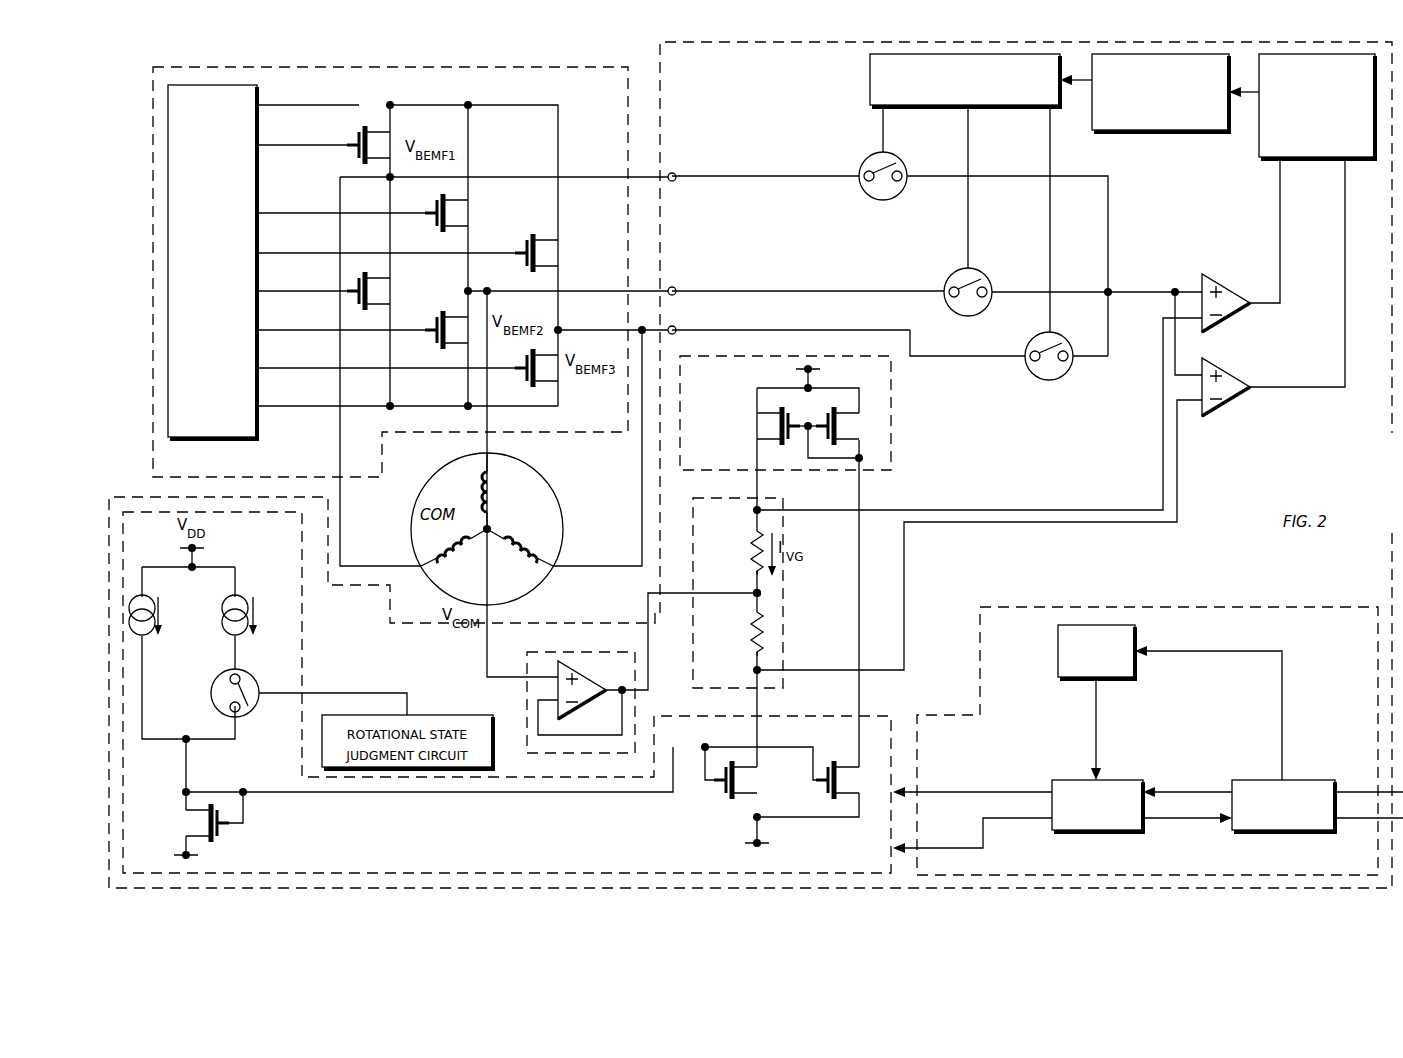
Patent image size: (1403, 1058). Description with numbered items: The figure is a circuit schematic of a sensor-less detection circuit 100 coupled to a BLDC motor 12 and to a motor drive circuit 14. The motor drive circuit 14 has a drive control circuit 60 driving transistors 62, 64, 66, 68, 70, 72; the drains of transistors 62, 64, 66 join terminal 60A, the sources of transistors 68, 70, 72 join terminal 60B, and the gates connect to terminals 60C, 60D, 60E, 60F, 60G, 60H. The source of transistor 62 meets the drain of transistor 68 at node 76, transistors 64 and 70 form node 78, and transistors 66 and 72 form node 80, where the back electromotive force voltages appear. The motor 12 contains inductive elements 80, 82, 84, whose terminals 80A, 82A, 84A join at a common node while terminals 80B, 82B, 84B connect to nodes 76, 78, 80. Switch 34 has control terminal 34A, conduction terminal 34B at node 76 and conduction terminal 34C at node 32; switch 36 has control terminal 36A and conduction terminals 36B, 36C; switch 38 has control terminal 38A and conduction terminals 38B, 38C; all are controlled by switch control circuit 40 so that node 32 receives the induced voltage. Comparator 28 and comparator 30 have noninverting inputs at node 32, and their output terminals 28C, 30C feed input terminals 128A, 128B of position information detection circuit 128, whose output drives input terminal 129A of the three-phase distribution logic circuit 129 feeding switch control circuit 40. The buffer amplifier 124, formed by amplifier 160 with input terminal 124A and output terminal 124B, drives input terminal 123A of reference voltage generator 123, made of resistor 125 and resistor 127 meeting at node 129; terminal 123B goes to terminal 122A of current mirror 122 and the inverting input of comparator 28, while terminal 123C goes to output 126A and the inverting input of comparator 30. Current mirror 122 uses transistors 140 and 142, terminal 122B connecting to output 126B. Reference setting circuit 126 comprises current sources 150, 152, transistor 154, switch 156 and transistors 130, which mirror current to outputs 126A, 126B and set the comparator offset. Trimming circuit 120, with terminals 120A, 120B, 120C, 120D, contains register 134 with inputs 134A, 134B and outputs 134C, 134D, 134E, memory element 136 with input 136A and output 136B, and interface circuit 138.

The BLDC motor 12 is at (452, 469).
The motor drive circuit 14 is at (153, 164).
The comparator 28 is at (1215, 286).
The output terminal of comparator 28 28C is at (1258, 305).
The comparator 30 is at (1215, 370).
The output terminal of comparator 30 30C is at (1258, 390).
The node 32 is at (1108, 290).
The switch 34 is at (885, 200).
The control terminal 34A is at (883, 130).
The conduction terminal 34B is at (849, 172).
The conduction terminal 34C is at (930, 172).
The switch 36 is at (955, 316).
The control terminal 36A is at (968, 255).
The conduction terminal 36B is at (934, 288).
The conduction terminal 36C is at (1015, 288).
The switch 38 is at (1026, 374).
The control terminal 38A is at (1050, 310).
The conduction terminal 38B is at (1016, 354).
The conduction terminal 38C is at (1084, 365).
The switch control circuit 40 is at (870, 80).
The drive control circuit 60 is at (204, 440).
The terminal 60A is at (268, 104).
The terminal 60B is at (262, 404).
The terminal 60C is at (264, 140).
The terminal 60D is at (264, 210).
The terminal 60E is at (264, 251).
The terminal 60F is at (262, 289).
The terminal 60G is at (262, 327).
The terminal 60H is at (262, 365).
The drive transistor 62 is at (396, 136).
The drive transistor 64 is at (460, 215).
The drive transistor 66 is at (550, 253).
The drive transistor 68 is at (382, 292).
The drive transistor 70 is at (442, 310).
The drive transistor 72 is at (552, 372).
The node 76 is at (388, 179).
The node 78 is at (487, 289).
The node / inductive element 80 is at (560, 328).
The terminal 80A is at (473, 539).
The terminal 80B is at (419, 566).
The inductive element 82 is at (479, 486).
The terminal 82A is at (490, 518).
The terminal 82B is at (487, 460).
The inductive element 84 is at (514, 531).
The terminal 84A is at (493, 547).
The terminal 84B is at (555, 559).
The detection circuit 100 is at (660, 66).
The trimming circuit 120 is at (1214, 607).
The terminal 120A is at (915, 795).
The terminal 120B is at (915, 856).
The interface terminal 120C is at (1345, 799).
The interface terminal 120D is at (1345, 822).
The current mirror 122 is at (895, 440).
The terminal of current mirror 122A is at (752, 475).
The terminal of current mirror 122B is at (859, 533).
The reference voltage generator 123 is at (783, 630).
The input terminal 123A is at (663, 593).
The terminal 123B is at (765, 493).
The terminal 123C is at (752, 688).
The buffer amplifier 124 is at (565, 652).
The input terminal 124A is at (530, 677).
The output terminal 124B is at (620, 696).
The resistor 125 is at (748, 544).
The reference setting circuit 126 is at (302, 626).
The output terminal 126A is at (754, 742).
The output terminal 126B is at (860, 716).
The resistor 127 is at (752, 638).
The position information detection circuit 128 is at (1262, 160).
The input terminal 128A is at (1280, 197).
The input terminal 128B is at (1345, 186).
The 3-phase distribution logic circuit / node 129 is at (752, 591).
The input terminal 129A is at (1256, 95).
The transistors 130 is at (820, 760).
The register 134 is at (1124, 779).
The input 134A is at (1094, 762).
The input 134B is at (1160, 796).
The output 134C is at (1155, 822).
The output 134D is at (1043, 790).
The output 134E is at (1043, 818).
The memory element 136 is at (1080, 678).
The input 136A is at (1160, 653).
The output 136B is at (1098, 700).
The interface circuit 138 is at (1298, 778).
The transistor 140 is at (850, 430).
The transistor 142 is at (765, 426).
The current source 150 is at (150, 630).
The current source 152 is at (227, 634).
The transistor 154 is at (193, 828).
The switch 156 is at (259, 679).
The amplifier 160 is at (590, 682).